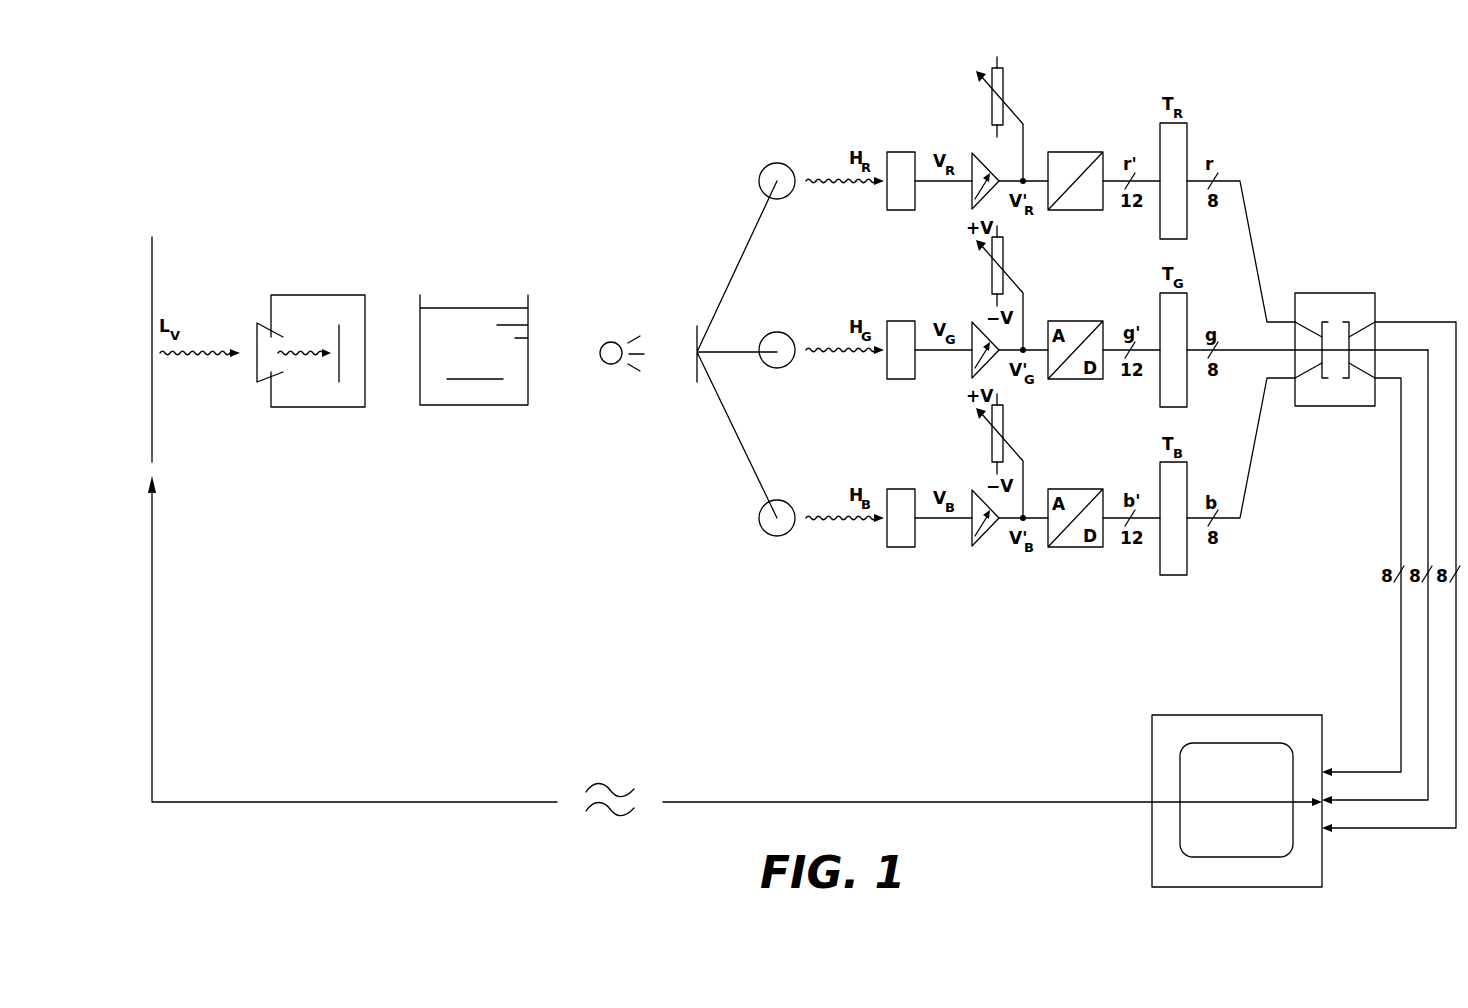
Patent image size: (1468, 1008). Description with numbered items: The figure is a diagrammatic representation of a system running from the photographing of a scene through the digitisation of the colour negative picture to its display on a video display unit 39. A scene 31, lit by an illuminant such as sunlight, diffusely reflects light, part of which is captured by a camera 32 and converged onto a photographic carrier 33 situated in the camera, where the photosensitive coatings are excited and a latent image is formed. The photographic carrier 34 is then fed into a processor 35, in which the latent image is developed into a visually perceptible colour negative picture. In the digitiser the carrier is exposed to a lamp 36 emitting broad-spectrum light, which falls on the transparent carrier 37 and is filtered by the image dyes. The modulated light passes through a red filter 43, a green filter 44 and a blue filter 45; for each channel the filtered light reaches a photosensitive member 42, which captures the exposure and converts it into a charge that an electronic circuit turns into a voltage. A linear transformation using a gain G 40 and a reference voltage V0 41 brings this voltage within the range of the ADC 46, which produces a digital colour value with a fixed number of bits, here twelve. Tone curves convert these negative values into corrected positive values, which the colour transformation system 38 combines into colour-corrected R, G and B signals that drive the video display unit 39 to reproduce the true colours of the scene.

The scene 31 is at (153, 268).
The camera 32 is at (341, 300).
The photographic carrier 33 is at (338, 371).
The photographic carrier 34 is at (460, 378).
The processor 35 is at (528, 295).
The lamp 36 is at (615, 343).
The transparent carrier 37 is at (697, 375).
The colour transformation system 38 is at (1345, 300).
The video display unit 39 is at (1258, 720).
The gain G 40 is at (975, 200).
The reference voltage V_0 41 is at (998, 80).
The photosensitive member 42 is at (903, 154).
The red filter 43 is at (781, 174).
The green filter 44 is at (783, 338).
The blue filter 45 is at (783, 506).
The ADC 46 is at (1085, 154).